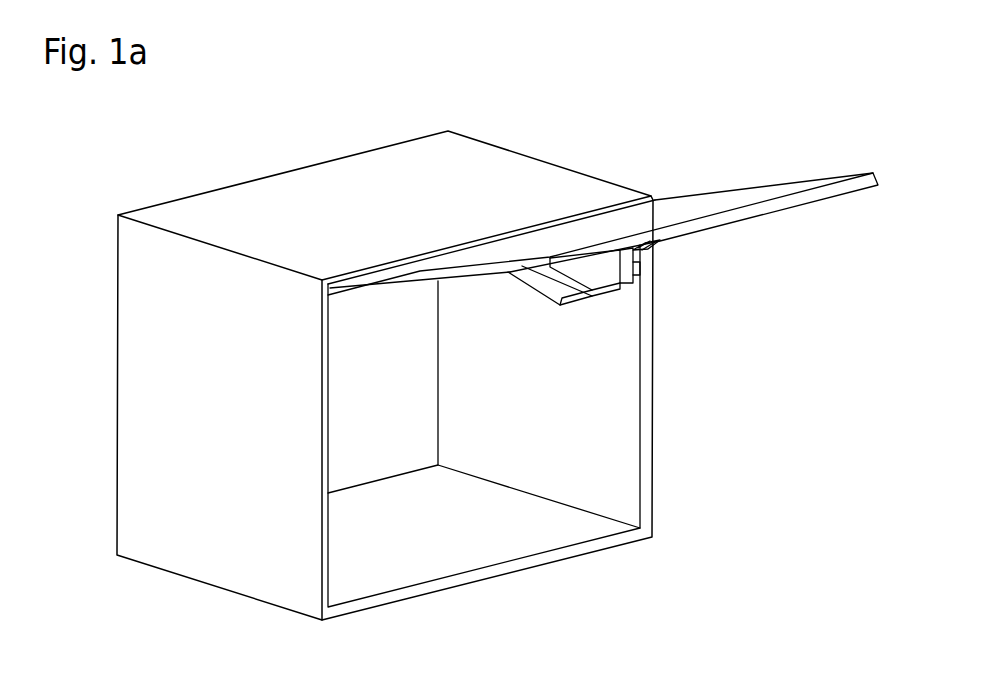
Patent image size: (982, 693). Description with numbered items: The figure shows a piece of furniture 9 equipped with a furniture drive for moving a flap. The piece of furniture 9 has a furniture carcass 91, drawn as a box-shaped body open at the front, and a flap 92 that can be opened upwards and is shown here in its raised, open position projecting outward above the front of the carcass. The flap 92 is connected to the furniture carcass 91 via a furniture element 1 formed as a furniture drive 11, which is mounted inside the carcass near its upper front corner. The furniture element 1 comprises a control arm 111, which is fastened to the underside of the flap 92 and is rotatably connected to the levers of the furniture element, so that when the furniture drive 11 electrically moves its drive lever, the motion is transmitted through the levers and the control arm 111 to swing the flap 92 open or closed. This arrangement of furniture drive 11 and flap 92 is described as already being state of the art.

The piece of furniture 9 is at (471, 379).
The furniture carcass 91 is at (243, 572).
The flap 92 is at (782, 190).
The furniture element 1 is at (628, 334).
The furniture drive 11 is at (560, 302).
The control arm 111 is at (653, 247).